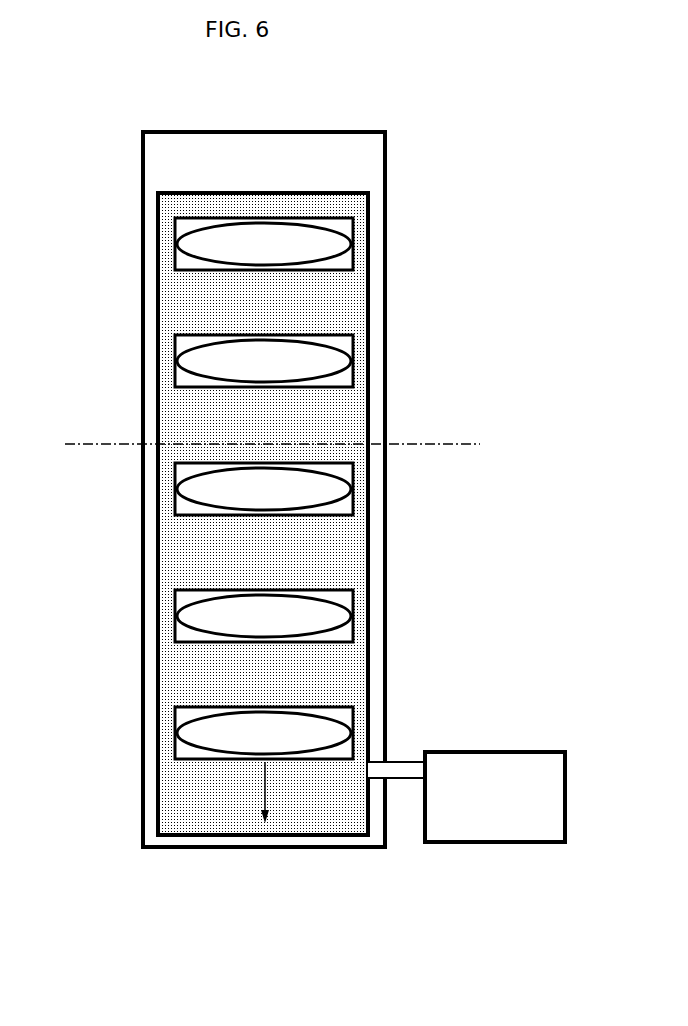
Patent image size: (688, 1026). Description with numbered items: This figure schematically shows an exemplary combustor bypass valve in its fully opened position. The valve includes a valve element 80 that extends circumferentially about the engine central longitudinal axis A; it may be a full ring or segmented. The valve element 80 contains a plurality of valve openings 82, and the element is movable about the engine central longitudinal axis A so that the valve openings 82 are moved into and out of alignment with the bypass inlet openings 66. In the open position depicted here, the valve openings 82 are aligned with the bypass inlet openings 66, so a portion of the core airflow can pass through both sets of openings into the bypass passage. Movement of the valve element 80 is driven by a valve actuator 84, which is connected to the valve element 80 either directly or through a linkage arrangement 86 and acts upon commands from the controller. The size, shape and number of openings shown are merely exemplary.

The valve element 80 is at (186, 294).
The valve openings 82 is at (352, 219).
The bypass inlet openings 66 is at (263, 247).
The linkage arrangement 86 is at (398, 757).
The valve actuator 84 is at (509, 820).
The engine central longitudinal axis A is at (103, 446).